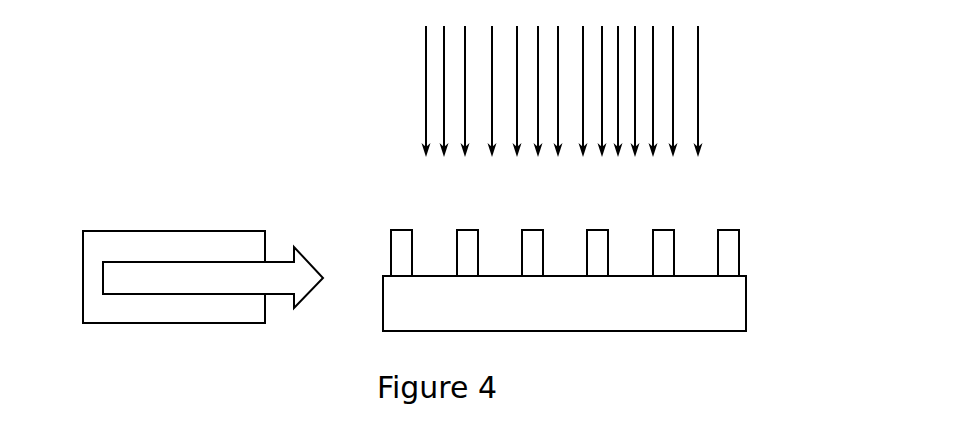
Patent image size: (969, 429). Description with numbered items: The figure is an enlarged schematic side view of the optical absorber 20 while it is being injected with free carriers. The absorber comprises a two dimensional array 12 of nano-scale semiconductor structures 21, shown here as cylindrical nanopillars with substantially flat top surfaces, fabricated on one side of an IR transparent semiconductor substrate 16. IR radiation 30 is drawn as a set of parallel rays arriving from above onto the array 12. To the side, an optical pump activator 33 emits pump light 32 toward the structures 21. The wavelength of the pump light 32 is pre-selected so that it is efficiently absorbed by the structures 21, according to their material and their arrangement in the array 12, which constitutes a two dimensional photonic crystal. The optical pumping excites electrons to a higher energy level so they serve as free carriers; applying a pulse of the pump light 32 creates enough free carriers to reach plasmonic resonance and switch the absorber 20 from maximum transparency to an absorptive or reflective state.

The IR radiation 30 is at (419, 83).
The optical absorber 20 is at (560, 241).
The two dimensional array 12 is at (599, 253).
The substrate 16 is at (730, 303).
The structures 21 is at (723, 242).
The pump light 32 is at (155, 251).
The optical pump activator 33 is at (203, 312).